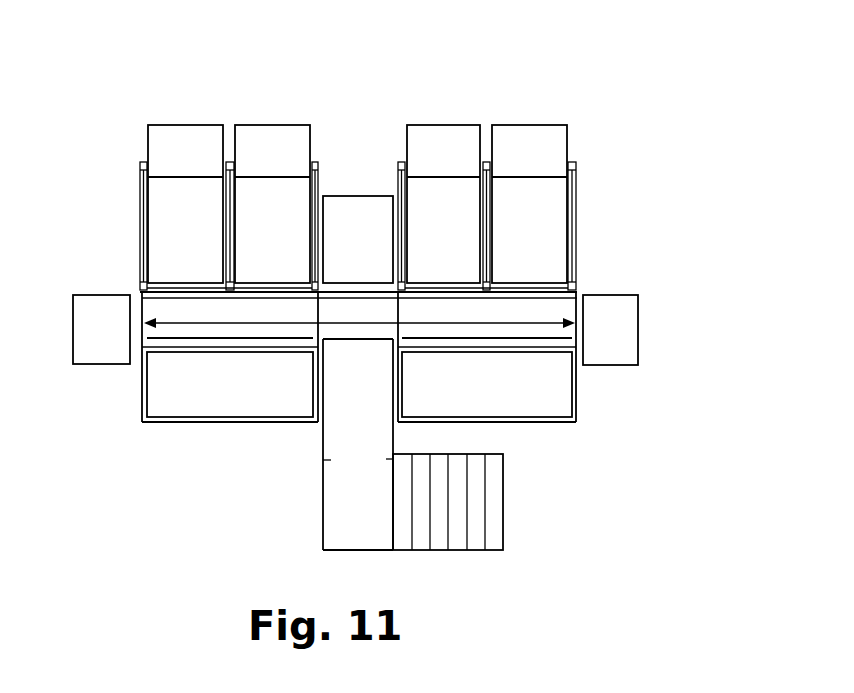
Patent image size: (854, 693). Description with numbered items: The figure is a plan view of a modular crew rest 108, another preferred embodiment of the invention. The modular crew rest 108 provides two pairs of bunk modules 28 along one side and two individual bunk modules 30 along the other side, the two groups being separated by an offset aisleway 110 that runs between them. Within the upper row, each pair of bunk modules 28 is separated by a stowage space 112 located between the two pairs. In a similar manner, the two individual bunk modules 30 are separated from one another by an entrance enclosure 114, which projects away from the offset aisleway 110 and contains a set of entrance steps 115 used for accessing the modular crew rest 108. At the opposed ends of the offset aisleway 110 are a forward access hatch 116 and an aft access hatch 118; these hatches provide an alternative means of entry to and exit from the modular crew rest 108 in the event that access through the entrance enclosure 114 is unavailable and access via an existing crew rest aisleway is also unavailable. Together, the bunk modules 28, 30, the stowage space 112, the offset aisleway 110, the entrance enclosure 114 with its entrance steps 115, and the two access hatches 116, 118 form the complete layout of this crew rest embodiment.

The modular crew rest 108 is at (560, 86).
The bunk modules 28 is at (358, 179).
The stowage space 112 is at (353, 207).
The offset aisleway 110 is at (192, 311).
The bunk modules 30 is at (242, 395).
The entrance enclosure 114 is at (372, 442).
The entrance steps 115 is at (480, 522).
The forward access hatch 116 is at (87, 355).
The aft access hatch 118 is at (618, 350).